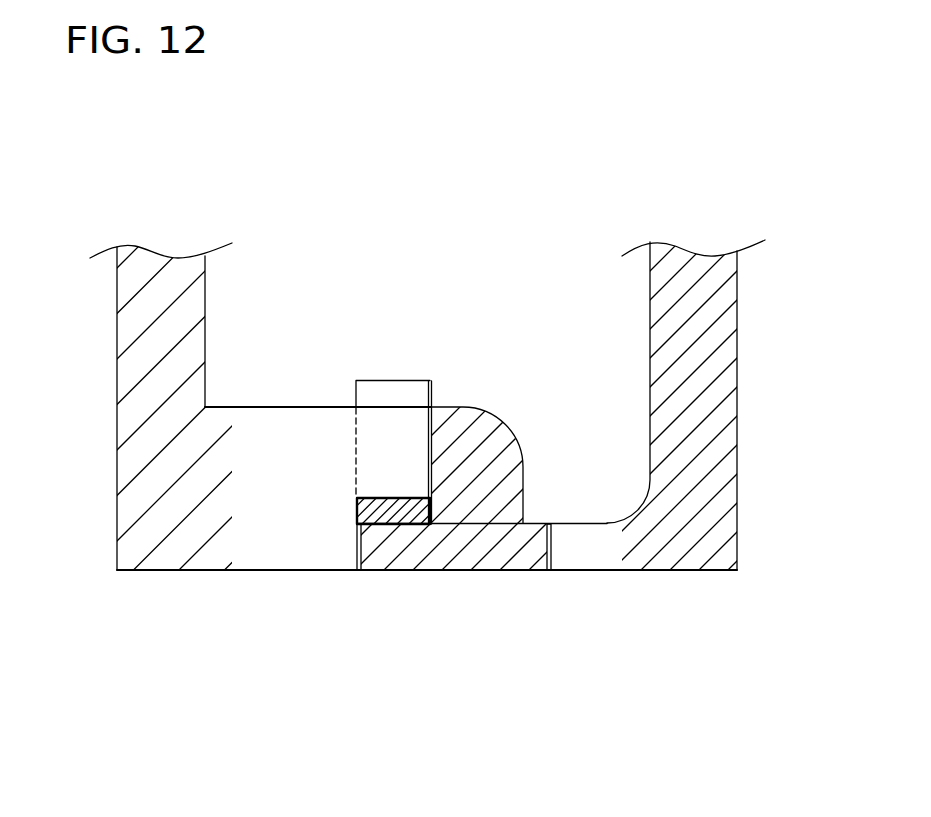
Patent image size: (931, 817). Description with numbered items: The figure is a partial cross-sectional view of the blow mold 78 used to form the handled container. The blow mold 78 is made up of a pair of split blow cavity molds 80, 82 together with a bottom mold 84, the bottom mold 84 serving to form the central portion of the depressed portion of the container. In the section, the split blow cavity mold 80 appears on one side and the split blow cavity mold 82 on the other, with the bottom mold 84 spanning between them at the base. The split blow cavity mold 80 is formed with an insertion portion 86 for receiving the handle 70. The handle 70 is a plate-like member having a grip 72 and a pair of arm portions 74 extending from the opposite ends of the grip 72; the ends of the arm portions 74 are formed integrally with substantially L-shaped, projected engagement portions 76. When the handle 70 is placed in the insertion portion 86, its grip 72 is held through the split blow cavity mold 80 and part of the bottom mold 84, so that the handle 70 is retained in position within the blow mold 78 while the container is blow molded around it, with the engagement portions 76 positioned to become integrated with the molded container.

The handle 70 is at (438, 390).
The grip 72 is at (390, 528).
The arm portions 74 is at (357, 460).
The engagement portions 76 is at (397, 380).
The blow mold 78 is at (733, 227).
The split blow cavity mold 80 is at (150, 344).
The split blow cavity mold 82 is at (690, 341).
The bottom mold 84 is at (468, 580).
The insertion portion 86 is at (410, 504).